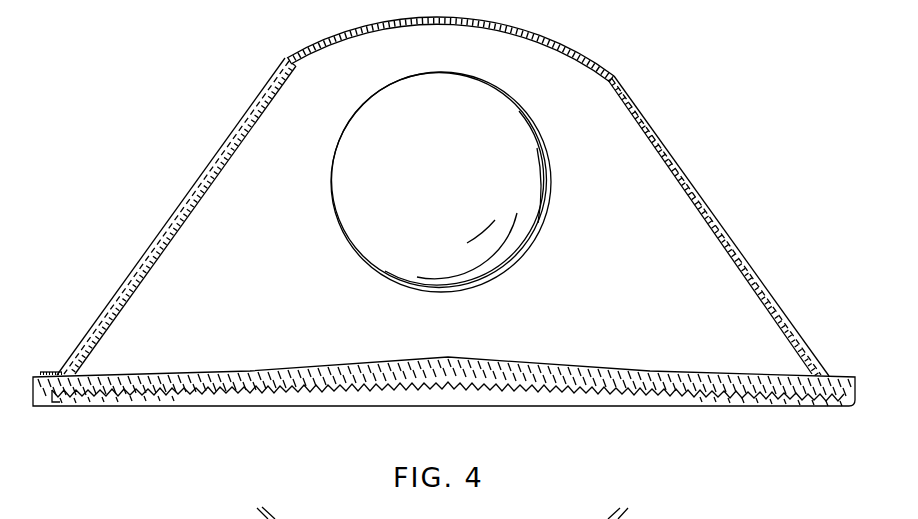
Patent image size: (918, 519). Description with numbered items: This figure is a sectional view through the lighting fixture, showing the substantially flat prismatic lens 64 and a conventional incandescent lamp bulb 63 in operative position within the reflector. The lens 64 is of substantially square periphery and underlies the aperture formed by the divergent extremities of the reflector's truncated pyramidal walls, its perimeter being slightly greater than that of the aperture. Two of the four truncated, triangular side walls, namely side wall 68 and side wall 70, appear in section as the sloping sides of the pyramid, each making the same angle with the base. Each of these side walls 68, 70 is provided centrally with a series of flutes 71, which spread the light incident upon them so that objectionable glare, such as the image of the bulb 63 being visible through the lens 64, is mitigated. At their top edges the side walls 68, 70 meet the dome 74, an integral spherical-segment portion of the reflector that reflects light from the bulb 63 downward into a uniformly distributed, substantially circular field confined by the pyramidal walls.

The dome 74 is at (500, 23).
The flutes 71 is at (210, 186).
The side wall 68 is at (137, 280).
The side wall 70 is at (761, 278).
The bulb 63 is at (450, 197).
The prismatic lens 64 is at (583, 408).